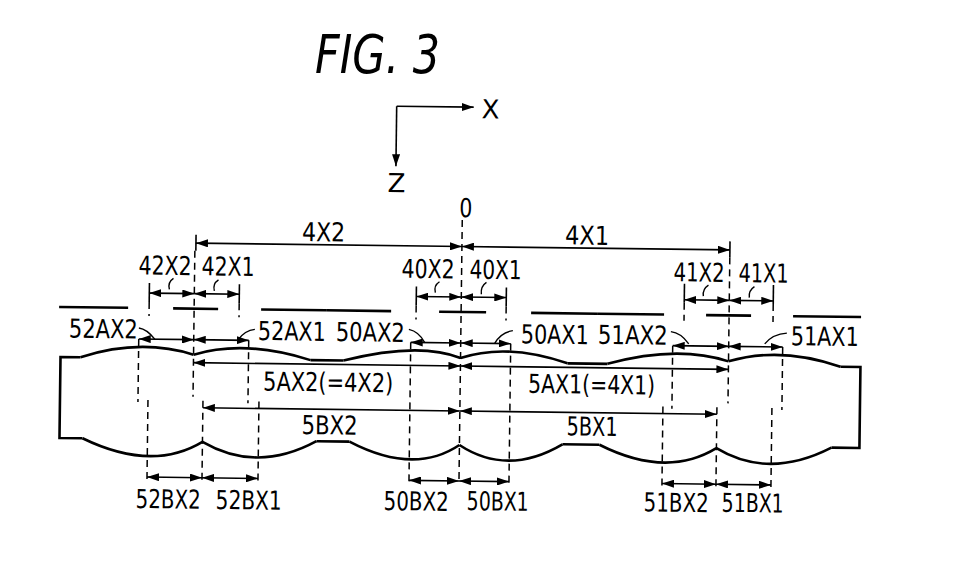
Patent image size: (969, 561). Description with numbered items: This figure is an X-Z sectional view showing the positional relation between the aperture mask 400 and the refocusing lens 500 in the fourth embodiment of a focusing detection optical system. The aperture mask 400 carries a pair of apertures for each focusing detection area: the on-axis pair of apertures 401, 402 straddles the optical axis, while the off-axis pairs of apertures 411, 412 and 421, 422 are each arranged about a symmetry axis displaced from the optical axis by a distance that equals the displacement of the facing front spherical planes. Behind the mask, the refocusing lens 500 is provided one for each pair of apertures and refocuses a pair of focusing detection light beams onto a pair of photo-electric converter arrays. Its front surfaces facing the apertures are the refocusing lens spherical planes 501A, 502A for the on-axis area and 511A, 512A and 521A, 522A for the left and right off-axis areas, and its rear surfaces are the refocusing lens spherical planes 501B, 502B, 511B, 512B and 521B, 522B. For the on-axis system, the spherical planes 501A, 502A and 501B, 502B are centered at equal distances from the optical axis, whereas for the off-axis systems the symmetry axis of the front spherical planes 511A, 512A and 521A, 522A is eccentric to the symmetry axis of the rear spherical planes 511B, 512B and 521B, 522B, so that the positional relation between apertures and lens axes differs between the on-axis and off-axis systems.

The aperture mask 400 is at (90, 308).
The aperture 401 is at (513, 314).
The aperture 402 is at (410, 311).
The aperture 411 is at (785, 310).
The aperture 412 is at (672, 308).
The aperture 421 is at (249, 310).
The aperture 422 is at (135, 310).
The refocusing lens 500 is at (54, 428).
The refocusing lens spherical plane 501A is at (497, 357).
The refocusing lens spherical plane 502A is at (438, 357).
The refocusing lens spherical plane 511A is at (807, 353).
The refocusing lens spherical plane 512A is at (692, 354).
The refocusing lens spherical plane 521A is at (230, 355).
The refocusing lens spherical plane 522A is at (112, 355).
The refocusing lens spherical plane 501B is at (557, 459).
The refocusing lens spherical plane 502B is at (361, 456).
The refocusing lens spherical plane 511B is at (813, 454).
The refocusing lens spherical plane 512B is at (625, 453).
The refocusing lens spherical plane 521B is at (290, 459).
The refocusing lens spherical plane 522B is at (110, 459).